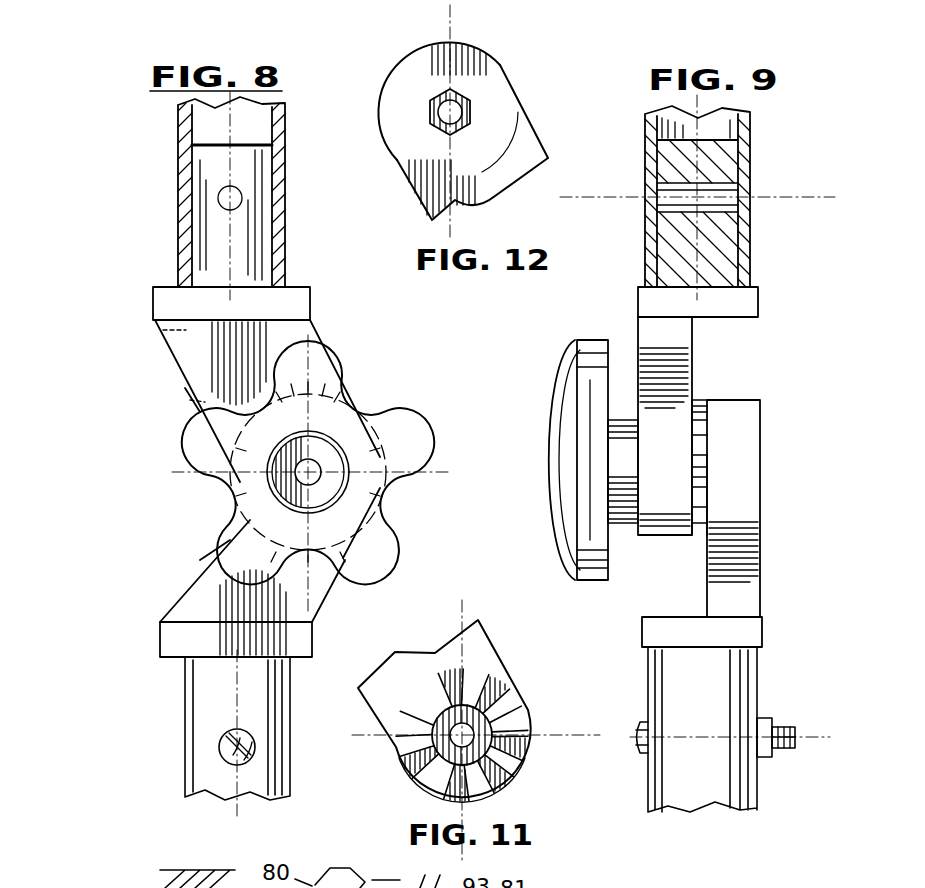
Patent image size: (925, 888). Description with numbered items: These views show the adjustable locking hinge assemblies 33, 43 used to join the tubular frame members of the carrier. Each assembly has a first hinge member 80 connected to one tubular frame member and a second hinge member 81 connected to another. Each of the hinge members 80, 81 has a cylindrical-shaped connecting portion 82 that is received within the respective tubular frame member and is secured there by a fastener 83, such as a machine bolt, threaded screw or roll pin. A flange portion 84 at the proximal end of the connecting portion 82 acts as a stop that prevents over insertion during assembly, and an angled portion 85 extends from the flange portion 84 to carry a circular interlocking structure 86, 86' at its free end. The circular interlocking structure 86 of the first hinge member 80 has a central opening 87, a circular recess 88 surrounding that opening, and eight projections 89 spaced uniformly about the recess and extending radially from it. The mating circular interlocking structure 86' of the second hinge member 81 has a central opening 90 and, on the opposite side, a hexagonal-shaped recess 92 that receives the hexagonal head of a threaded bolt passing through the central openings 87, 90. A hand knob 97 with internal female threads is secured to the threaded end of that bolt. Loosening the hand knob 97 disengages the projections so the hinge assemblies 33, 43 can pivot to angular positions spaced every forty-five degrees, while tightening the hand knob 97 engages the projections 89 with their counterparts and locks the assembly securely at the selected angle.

In FIG. 8, the locking hinge assembly 33 is at (158, 489).
In FIG. 9, the locking hinge assembly 33 is at (786, 450).
In FIG. 8, the locking hinge assembly 43 is at (158, 489).
In FIG. 9, the locking hinge assembly 43 is at (786, 450).
In FIG. 8, the first hinge member 80 is at (190, 360).
In FIG. 9, the first hinge member 80 is at (690, 343).
In FIG. 11, the first hinge member 80 is at (475, 646).
In FIG. 8, the second hinge member 81 is at (185, 591).
In FIG. 9, the second hinge member 81 is at (762, 566).
In FIG. 12, the second hinge member 81 is at (522, 135).
In FIG. 8, the cylindrical-shaped connecting portion 82 is at (205, 232).
In FIG. 9, the cylindrical-shaped connecting portion 82 is at (720, 241).
In FIG. 8, the fastener 83 is at (222, 738).
In FIG. 9, the fastener 83 is at (785, 722).
In FIG. 8, the flange portion 84 is at (302, 296).
In FIG. 9, the flange portion 84 is at (745, 301).
In FIG. 8, the angled portion 85 is at (185, 390).
In FIG. 8, the circular interlocking structure 86 is at (348, 450).
In FIG. 9, the circular interlocking structure 86 is at (659, 536).
In FIG. 8, the circular interlocking structure 86' is at (308, 472).
In FIG. 9, the circular interlocking structure 86' is at (769, 418).
In FIG. 12, the circular interlocking structure 86' is at (426, 101).
In FIG. 11, the central opening 87 is at (503, 757).
In FIG. 11, the circular recess 88 is at (482, 731).
In FIG. 11, the projections 89 is at (490, 687).
In FIG. 12, the central opening 90 is at (445, 112).
In FIG. 12, the hexagonal-shaped recess 92 is at (463, 92).
In FIG. 8, the hand knob 97 is at (412, 425).
In FIG. 9, the hand knob 97 is at (556, 500).